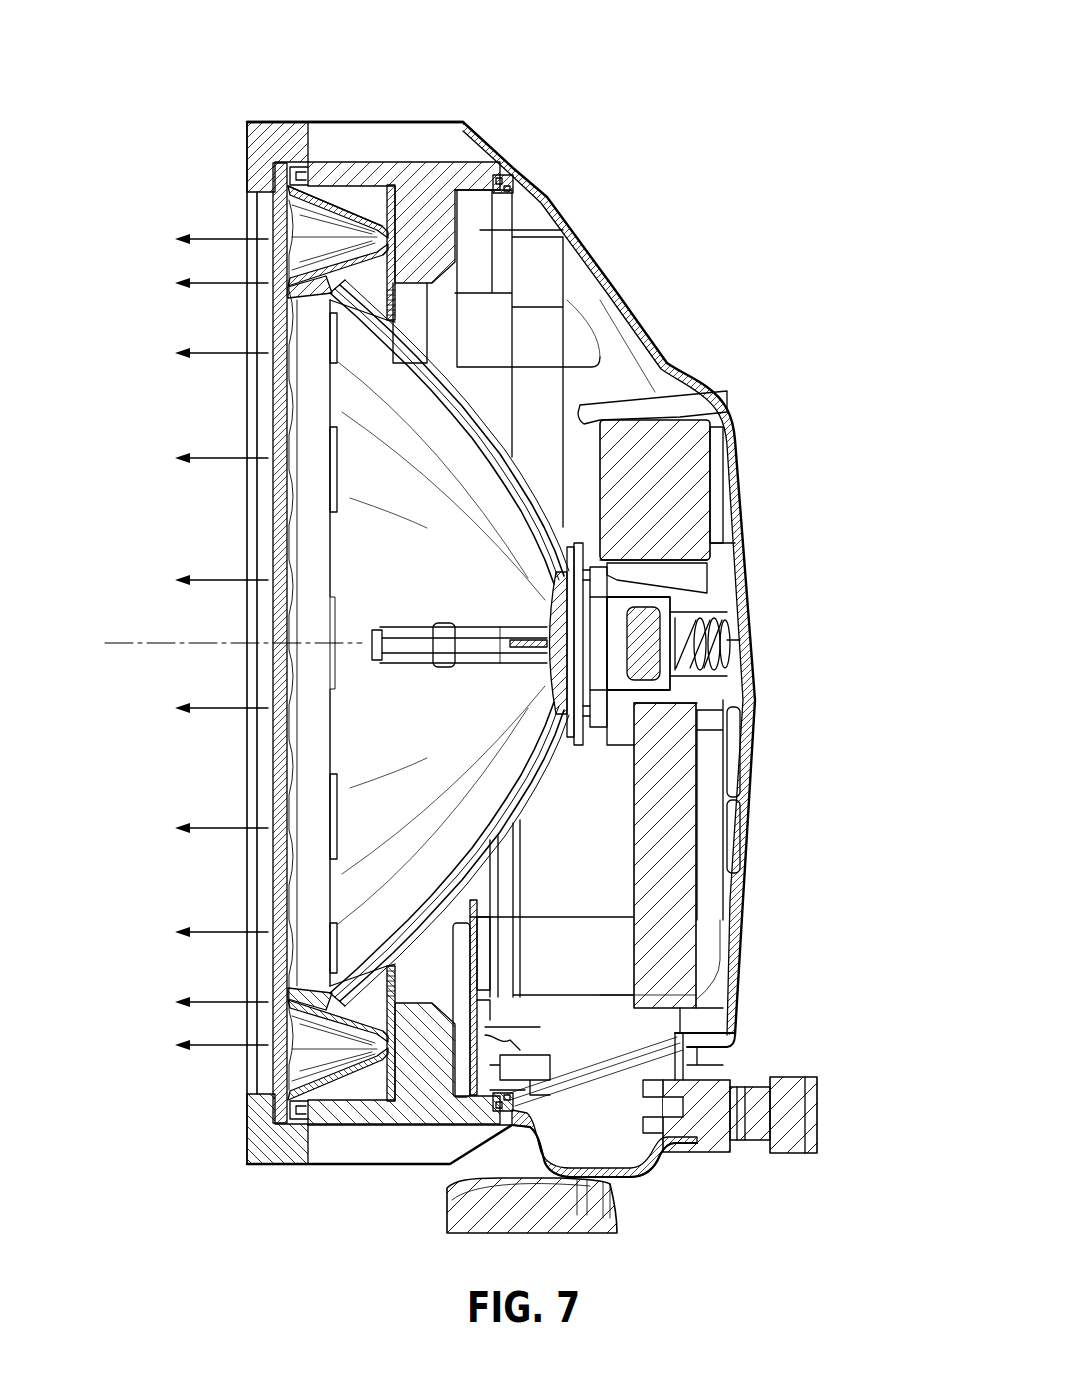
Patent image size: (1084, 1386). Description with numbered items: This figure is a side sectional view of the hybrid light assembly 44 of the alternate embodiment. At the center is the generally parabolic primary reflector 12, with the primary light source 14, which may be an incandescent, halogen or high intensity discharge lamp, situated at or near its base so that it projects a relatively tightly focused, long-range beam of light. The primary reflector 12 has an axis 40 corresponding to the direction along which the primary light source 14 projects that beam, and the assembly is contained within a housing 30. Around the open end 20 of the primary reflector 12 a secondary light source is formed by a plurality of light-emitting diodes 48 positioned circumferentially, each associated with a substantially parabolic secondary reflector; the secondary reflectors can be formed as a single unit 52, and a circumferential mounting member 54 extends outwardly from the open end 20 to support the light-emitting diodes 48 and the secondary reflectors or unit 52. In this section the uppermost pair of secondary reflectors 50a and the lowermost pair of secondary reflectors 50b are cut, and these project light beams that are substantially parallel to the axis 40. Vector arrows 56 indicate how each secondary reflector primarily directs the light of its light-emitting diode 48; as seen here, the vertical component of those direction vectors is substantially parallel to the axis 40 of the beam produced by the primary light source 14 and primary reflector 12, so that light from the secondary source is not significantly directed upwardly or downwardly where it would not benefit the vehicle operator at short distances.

The primary reflector 12 is at (488, 425).
The primary light source 14 is at (416, 620).
The open end 20 is at (333, 523).
The housing 30 is at (273, 213).
The axis 40 is at (233, 618).
The hybrid light assembly 44 is at (560, 72).
The light-emitting diodes 48 is at (390, 180).
The uppermost pair of secondary reflectors 50a is at (326, 212).
The lowermost pair of secondary reflectors 50b is at (330, 1072).
The single unit 52 is at (349, 192).
The circumferential mounting member 54 is at (398, 178).
The vector arrows 56 is at (207, 353).